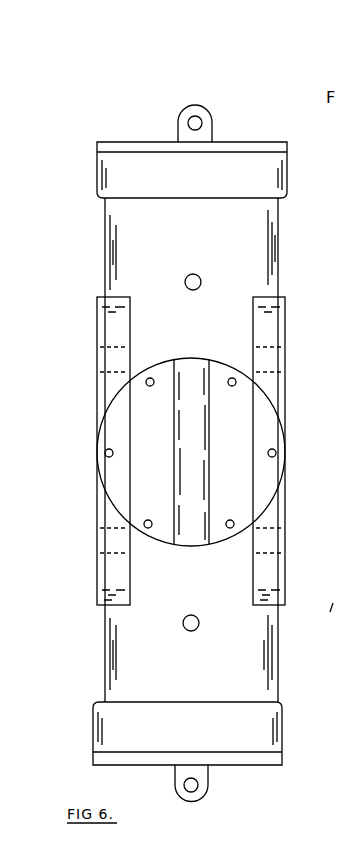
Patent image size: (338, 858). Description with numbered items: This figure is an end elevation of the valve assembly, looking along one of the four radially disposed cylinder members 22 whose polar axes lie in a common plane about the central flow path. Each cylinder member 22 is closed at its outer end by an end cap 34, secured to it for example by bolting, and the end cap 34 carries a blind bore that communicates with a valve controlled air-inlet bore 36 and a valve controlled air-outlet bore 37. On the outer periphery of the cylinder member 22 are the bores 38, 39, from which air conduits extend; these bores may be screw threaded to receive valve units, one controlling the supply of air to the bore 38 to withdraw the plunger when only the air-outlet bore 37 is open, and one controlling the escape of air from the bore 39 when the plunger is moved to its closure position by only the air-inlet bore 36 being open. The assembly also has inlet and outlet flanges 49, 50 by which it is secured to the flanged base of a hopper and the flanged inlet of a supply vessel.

The cylinder member 22 is at (257, 233).
The end cap 34 is at (142, 435).
The air-inlet bore 36 is at (198, 785).
The air-outlet bore 37 is at (188, 123).
The bore 38 is at (193, 274).
The bore 39 is at (191, 631).
The inlet flange 49 is at (278, 331).
The outlet flange 50 is at (97, 309).